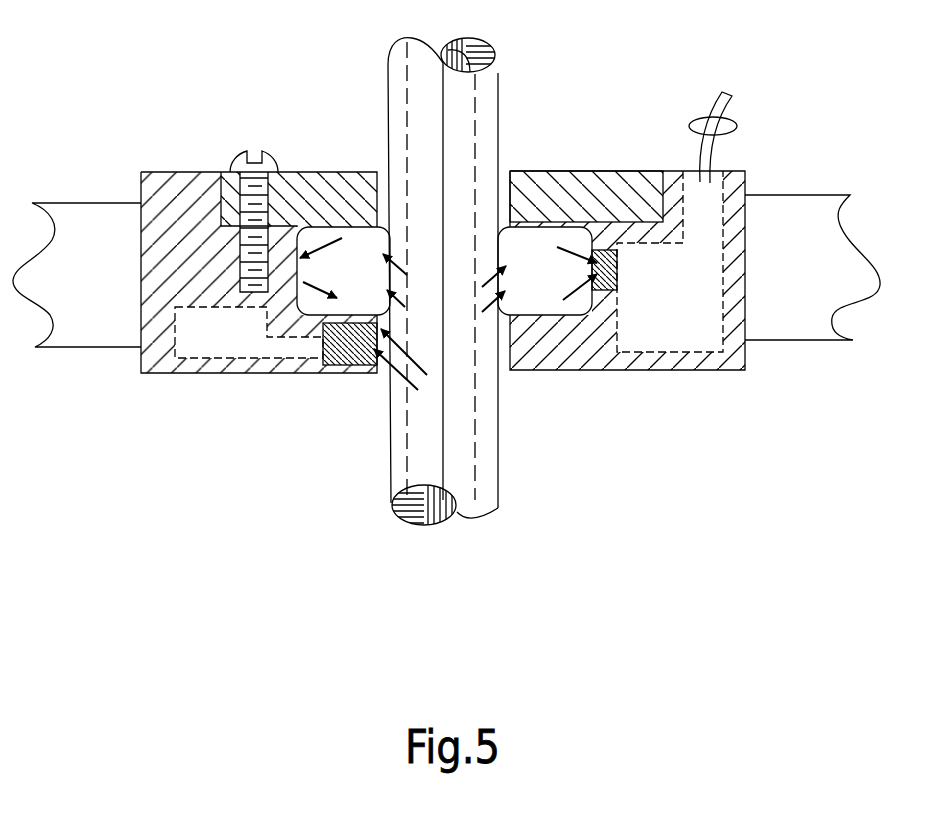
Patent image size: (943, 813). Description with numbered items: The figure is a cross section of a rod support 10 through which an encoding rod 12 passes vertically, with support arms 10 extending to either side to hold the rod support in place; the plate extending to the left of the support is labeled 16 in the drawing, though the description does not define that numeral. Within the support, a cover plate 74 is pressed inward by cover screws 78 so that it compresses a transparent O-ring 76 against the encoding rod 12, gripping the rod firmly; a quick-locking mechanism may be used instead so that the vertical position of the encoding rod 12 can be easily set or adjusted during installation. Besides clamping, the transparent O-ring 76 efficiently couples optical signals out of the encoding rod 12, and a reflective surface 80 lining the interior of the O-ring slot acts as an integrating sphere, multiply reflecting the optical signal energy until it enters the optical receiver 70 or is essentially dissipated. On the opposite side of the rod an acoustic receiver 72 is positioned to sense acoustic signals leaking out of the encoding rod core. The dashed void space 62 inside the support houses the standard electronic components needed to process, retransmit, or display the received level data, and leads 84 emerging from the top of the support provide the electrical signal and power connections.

The rod support 10 is at (723, 370).
The encoding rod 12 is at (498, 467).
The first panel 16 is at (95, 203).
The void space 62 is at (449, 265).
The optical receiver 70 is at (618, 265).
The acoustic receiver 72 is at (353, 345).
The cover plate 74 is at (330, 202).
The transparent O-ring 76 is at (586, 144).
The cover screws 78 is at (236, 161).
The reflective surface 80 is at (537, 317).
The leads 84 is at (736, 132).